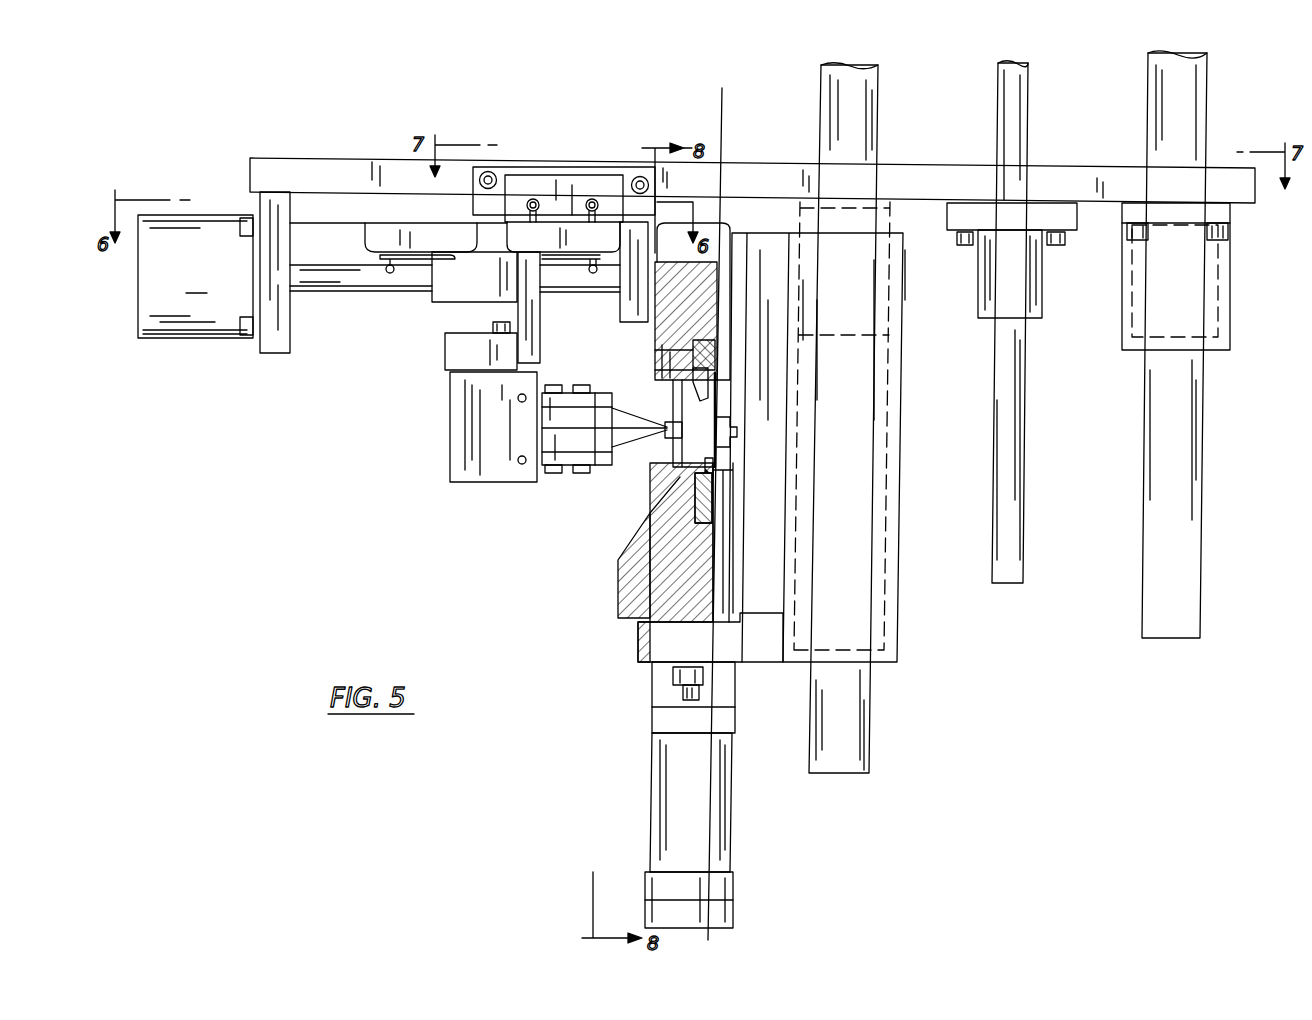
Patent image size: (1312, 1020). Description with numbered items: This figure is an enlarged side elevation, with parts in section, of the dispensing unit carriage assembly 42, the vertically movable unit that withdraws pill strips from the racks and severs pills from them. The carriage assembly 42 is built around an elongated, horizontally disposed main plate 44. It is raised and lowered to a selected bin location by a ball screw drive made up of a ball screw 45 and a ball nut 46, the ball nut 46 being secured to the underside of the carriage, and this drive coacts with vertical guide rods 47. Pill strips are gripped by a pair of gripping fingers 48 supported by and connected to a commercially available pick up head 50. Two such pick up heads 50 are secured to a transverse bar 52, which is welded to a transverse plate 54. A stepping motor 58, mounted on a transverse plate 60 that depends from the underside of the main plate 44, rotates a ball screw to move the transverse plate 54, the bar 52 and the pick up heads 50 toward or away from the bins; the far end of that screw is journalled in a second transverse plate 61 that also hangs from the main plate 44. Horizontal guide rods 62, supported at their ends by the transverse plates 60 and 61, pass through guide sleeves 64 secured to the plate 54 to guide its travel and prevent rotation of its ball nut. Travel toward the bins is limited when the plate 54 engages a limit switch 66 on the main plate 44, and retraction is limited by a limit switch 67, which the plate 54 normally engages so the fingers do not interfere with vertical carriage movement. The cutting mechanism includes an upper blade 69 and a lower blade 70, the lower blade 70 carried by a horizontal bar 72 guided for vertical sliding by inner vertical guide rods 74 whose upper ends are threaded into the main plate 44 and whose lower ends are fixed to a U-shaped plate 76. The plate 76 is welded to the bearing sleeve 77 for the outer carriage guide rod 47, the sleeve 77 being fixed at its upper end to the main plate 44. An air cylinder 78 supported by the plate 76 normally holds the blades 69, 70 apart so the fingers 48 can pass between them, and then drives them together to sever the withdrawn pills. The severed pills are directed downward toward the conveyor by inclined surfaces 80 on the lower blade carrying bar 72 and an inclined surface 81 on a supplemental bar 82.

The carriage assembly 42 is at (365, 462).
The main plate 44 is at (556, 163).
The ball screw 45 is at (1022, 478).
The ball nut 46 is at (1040, 300).
The guide rods 47 is at (866, 733).
The gripping fingers 48 is at (634, 441).
The pick up head 50 is at (452, 418).
The transverse bar 52 is at (445, 352).
The transverse plate 54 is at (536, 346).
The stepping motor 58 is at (146, 303).
The transverse plate 60 is at (272, 355).
The transverse plate 61 is at (636, 323).
The horizontal guide rods 62 is at (371, 297).
The guide sleeves 64 is at (476, 299).
The limit switch 66 is at (564, 224).
The limit switch 67 is at (450, 234).
The upper blade 69 is at (709, 397).
The lower blade 70 is at (713, 464).
The lower blade carrying bar 72 is at (704, 547).
The inner vertical guide rods 74 is at (673, 690).
The U-shaped plate 76 is at (762, 657).
The bearing sleeve 77 is at (894, 600).
The air cylinder 78 is at (654, 783).
The inclined surfaces 80 is at (668, 486).
The inclined surface 81 is at (618, 561).
The supplemental bar 82 is at (626, 603).